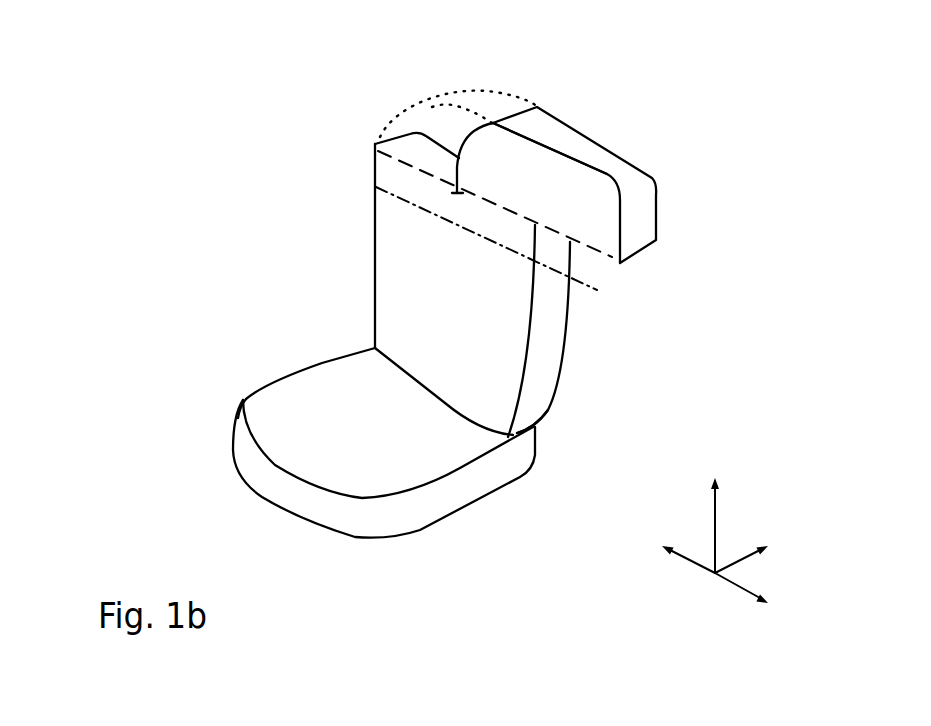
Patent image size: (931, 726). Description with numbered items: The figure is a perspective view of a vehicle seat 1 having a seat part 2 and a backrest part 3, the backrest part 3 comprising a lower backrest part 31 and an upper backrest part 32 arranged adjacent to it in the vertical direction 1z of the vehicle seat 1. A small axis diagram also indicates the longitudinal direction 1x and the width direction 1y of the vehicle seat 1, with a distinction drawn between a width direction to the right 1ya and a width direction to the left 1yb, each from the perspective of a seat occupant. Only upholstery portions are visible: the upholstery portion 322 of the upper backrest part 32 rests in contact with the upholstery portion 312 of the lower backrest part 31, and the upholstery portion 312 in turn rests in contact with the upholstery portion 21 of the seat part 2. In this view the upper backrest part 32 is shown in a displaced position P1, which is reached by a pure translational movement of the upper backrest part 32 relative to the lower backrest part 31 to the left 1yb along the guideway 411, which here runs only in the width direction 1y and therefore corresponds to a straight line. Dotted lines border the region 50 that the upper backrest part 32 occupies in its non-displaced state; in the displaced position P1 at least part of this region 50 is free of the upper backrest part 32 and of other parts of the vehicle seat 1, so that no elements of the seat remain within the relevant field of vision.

The vehicle seat 1 is at (165, 143).
The seat part 2 is at (285, 395).
The upholstery portion 21 is at (423, 465).
The backrest part 3 is at (342, 173).
The lower backrest part 31 is at (513, 352).
The upholstery portion 312 is at (512, 397).
The upper backrest part 32 is at (571, 166).
The displaced position P1 is at (597, 190).
The upholstery portion 322 is at (536, 158).
The guideway 411 is at (553, 267).
The region 50 is at (432, 123).
The vertical direction 1z is at (713, 521).
The longitudinal direction 1x is at (741, 552).
The width direction 1y is at (694, 588).
The width direction to the right 1ya is at (683, 557).
The width direction to the left 1yb is at (738, 588).